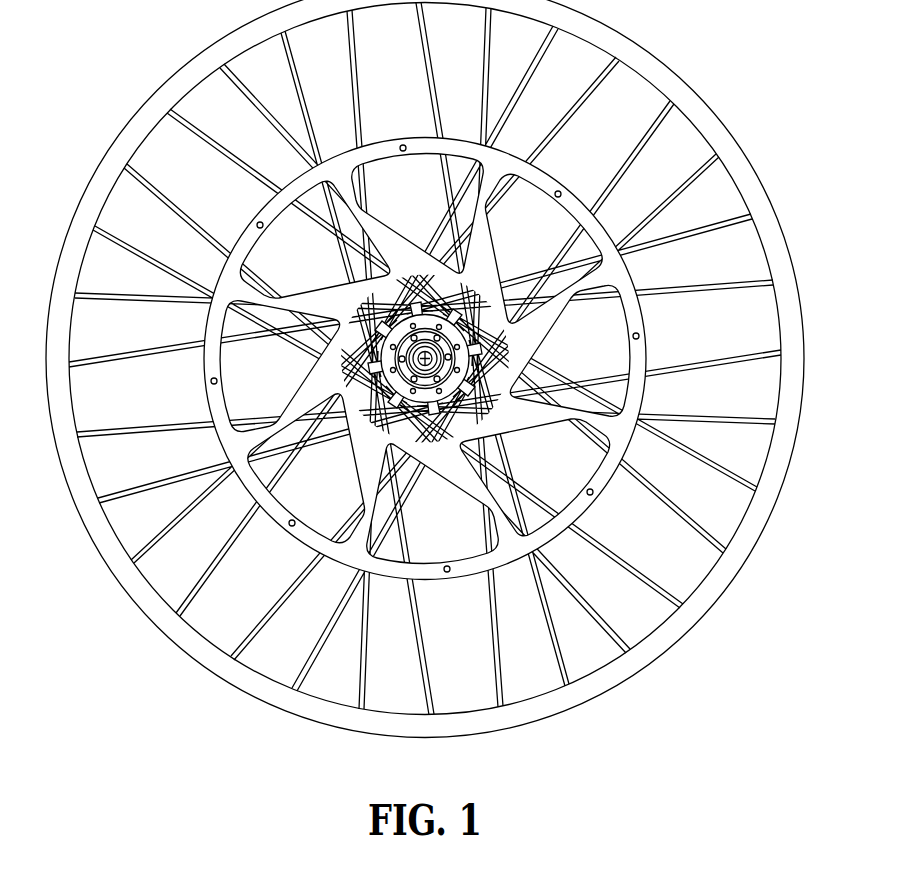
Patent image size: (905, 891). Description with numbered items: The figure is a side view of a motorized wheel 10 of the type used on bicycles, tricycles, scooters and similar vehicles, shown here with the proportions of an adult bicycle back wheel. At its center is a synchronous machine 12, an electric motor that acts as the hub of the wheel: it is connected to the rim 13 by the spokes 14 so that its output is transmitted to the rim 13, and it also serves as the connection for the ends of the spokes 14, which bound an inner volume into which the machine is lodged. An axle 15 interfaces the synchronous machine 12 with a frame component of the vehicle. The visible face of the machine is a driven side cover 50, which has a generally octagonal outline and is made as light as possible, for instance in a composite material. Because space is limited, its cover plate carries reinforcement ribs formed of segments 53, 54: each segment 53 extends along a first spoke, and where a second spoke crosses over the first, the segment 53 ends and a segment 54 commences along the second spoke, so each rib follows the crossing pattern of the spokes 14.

The motorized wheel 10 is at (128, 92).
The synchronous machine 12 is at (425, 330).
The rim 13 is at (672, 632).
The spokes 14 is at (722, 218).
The axle 15 is at (425, 348).
The driven side cover 50 is at (417, 168).
The rib segment 53 is at (381, 500).
The rib segment 54 is at (267, 432).